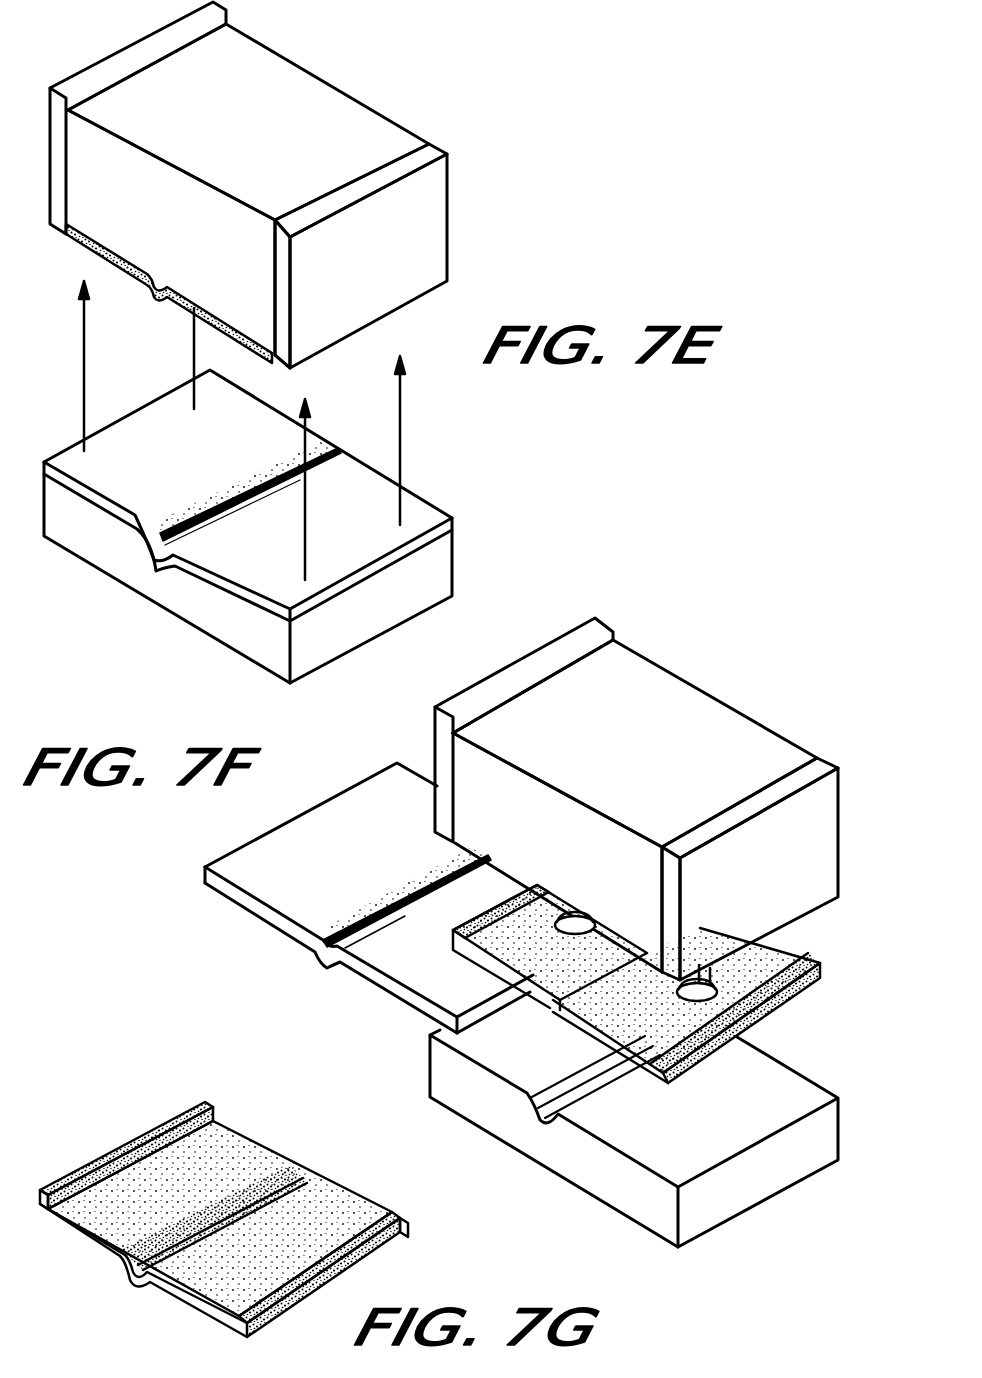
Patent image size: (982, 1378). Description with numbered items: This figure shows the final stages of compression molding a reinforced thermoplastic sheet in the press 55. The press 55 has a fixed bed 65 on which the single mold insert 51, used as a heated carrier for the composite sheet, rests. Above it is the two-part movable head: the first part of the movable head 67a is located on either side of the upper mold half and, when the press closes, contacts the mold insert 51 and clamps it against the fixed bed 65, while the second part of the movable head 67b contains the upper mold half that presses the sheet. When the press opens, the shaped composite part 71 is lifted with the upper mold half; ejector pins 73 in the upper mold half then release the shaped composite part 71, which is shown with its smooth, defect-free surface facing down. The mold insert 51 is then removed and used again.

In FIG. 7E, the single mold insert 51 is at (425, 517).
In FIG. 7G, the single mold insert 51 is at (270, 912).
In FIG. 7E, the press 55 is at (56, 352).
In FIG. 7G, the press 55 is at (790, 590).
In FIG. 7E, the fixed bed 65 is at (429, 570).
In FIG. 7G, the fixed bed 65 is at (763, 1175).
In FIG. 7E, the first part of the movable head 67a is at (96, 73).
In FIG. 7G, the first part of the movable head 67a is at (597, 632).
In FIG. 7E, the second part of the movable head 67b is at (325, 115).
In FIG. 7G, the second part of the movable head 67b is at (678, 710).
In FIG. 7E, the shaped composite part 71 is at (142, 277).
In FIG. 7F, the shaped composite part 71 is at (253, 1157).
In FIG. 7G, the shaped composite part 71 is at (763, 1006).
In FIG. 7G, the ejector pins 73 is at (562, 915).